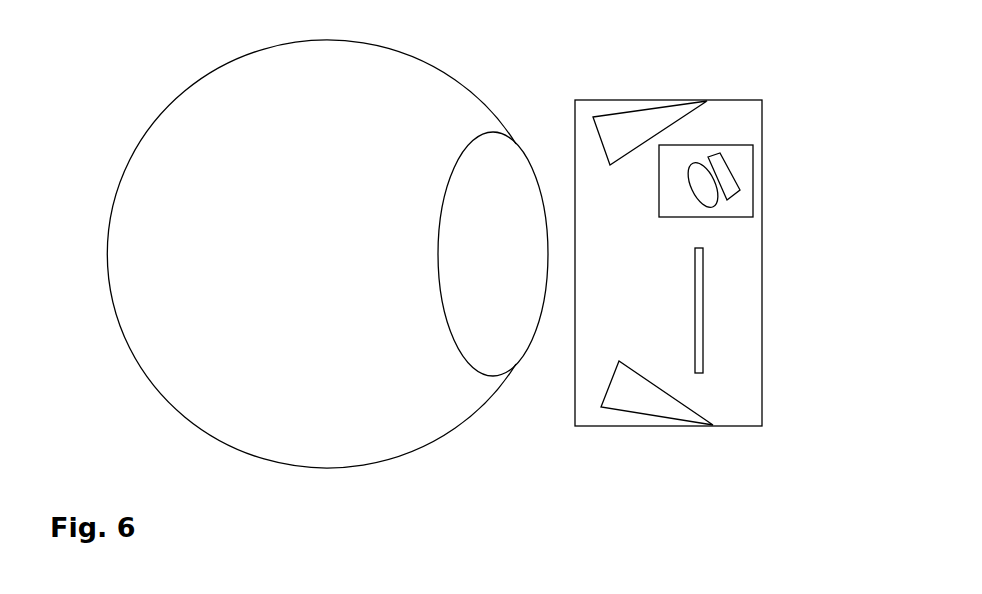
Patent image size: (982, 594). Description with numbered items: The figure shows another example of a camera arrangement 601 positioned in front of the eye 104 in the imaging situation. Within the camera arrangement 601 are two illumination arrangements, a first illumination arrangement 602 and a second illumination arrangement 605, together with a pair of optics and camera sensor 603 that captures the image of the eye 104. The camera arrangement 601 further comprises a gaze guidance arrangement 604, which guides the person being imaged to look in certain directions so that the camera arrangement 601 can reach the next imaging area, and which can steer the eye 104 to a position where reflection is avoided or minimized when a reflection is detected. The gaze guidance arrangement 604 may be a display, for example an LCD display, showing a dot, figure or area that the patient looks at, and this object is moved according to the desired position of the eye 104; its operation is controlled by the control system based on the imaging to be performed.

The eye 104 is at (212, 75).
The camera arrangement 601 is at (593, 100).
The first illumination arrangement 602 is at (623, 123).
The optics and camera sensor 603 is at (730, 145).
The gaze guidance arrangement 604 is at (703, 277).
The second illumination arrangement 605 is at (631, 413).